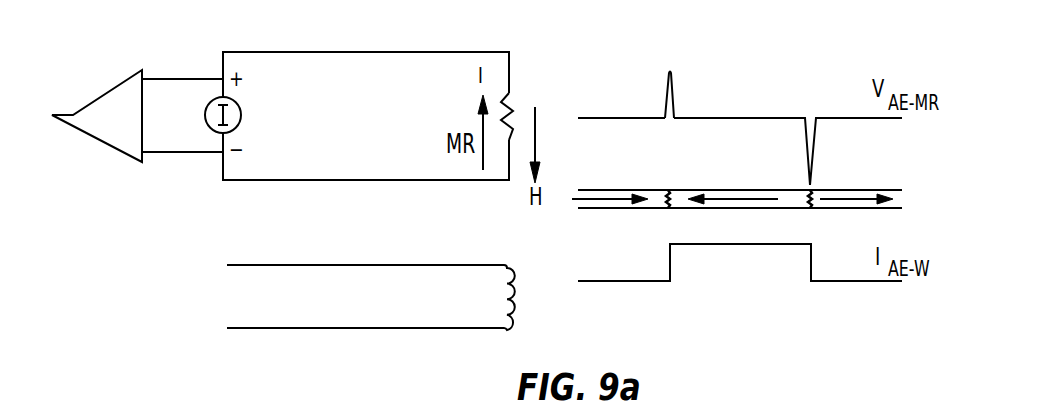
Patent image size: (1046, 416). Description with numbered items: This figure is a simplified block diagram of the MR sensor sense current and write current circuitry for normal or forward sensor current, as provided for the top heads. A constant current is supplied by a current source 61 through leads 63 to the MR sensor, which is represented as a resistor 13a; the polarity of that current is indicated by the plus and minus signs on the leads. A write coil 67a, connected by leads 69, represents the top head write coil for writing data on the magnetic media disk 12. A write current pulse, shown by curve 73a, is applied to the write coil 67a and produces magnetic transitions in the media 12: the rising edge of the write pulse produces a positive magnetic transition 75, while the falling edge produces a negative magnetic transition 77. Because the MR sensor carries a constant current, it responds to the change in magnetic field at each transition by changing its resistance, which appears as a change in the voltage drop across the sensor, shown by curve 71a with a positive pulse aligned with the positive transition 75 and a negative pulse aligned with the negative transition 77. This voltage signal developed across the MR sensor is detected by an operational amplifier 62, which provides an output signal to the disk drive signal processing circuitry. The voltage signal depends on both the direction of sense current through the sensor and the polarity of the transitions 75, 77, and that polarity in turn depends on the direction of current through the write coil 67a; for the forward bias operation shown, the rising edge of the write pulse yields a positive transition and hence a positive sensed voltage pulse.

The operational amplifier 62 is at (103, 95).
The current source 61 is at (241, 115).
The leads 63 is at (341, 52).
The resistor representing MR sensor 13a is at (511, 102).
The curve representing MR sensor voltage 71a is at (680, 103).
The positive magnetic transition 75 is at (693, 167).
The negative magnetic transition 77 is at (833, 164).
The magnetic media disk 12 is at (913, 201).
The curve representing write current pulse 73a is at (835, 283).
The leads 69 is at (349, 265).
The write coil 67a is at (518, 312).